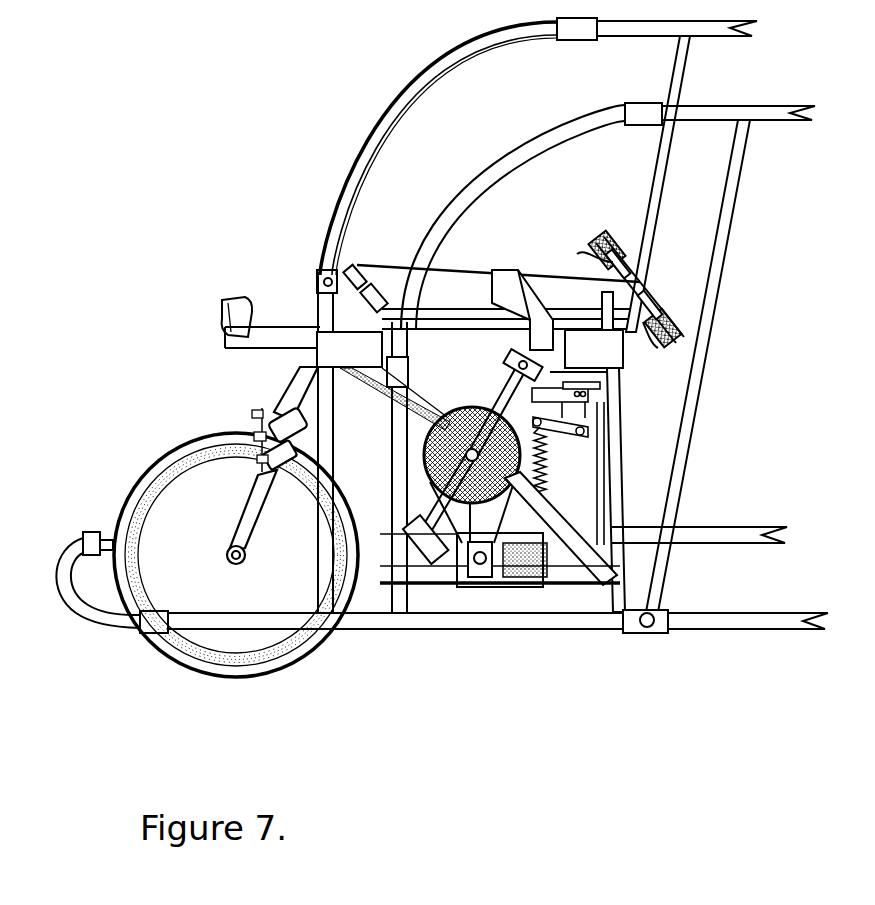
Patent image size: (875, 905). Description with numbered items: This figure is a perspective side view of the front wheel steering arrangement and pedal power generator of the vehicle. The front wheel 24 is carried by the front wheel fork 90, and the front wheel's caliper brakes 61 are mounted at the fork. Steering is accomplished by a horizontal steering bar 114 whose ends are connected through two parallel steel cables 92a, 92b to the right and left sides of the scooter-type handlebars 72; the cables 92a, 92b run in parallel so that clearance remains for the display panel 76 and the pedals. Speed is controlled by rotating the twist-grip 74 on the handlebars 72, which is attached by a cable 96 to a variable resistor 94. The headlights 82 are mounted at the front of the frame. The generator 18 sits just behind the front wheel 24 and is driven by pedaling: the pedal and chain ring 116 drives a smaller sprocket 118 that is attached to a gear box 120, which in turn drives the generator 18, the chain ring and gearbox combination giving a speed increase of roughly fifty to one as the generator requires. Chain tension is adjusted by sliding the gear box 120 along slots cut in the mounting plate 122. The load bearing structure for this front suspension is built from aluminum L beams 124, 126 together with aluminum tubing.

The generator 18 is at (527, 568).
The front wheel 24 is at (178, 657).
The caliper brakes 61 is at (273, 432).
The handlebars 72 is at (652, 297).
The twist-grip 74 is at (670, 322).
The display panel 76 is at (520, 290).
The headlights 82 is at (222, 310).
The front wheel fork 90 is at (250, 512).
The cable 92a is at (393, 263).
The cable 92b is at (444, 300).
The variable resistor 94 is at (587, 413).
The cable 96 is at (650, 350).
The horizontal steering bar 114 is at (357, 267).
The pedal and chain ring 116 is at (468, 580).
The sprocket 118 is at (492, 568).
The gear box 120 is at (477, 586).
The mounting plate 122 is at (423, 577).
The aluminum L beam 124 is at (286, 337).
The aluminum L beam 126 is at (587, 550).